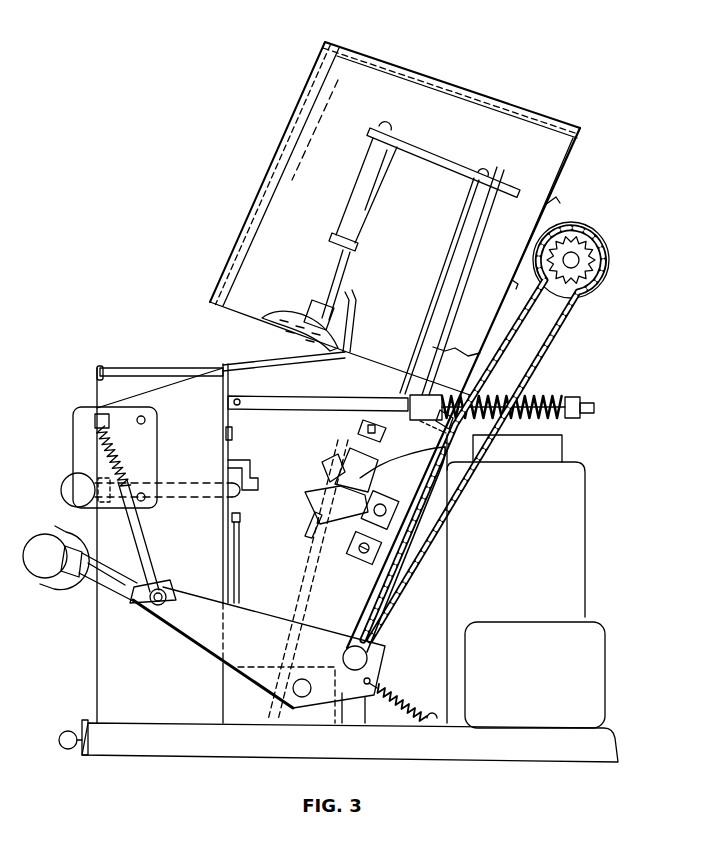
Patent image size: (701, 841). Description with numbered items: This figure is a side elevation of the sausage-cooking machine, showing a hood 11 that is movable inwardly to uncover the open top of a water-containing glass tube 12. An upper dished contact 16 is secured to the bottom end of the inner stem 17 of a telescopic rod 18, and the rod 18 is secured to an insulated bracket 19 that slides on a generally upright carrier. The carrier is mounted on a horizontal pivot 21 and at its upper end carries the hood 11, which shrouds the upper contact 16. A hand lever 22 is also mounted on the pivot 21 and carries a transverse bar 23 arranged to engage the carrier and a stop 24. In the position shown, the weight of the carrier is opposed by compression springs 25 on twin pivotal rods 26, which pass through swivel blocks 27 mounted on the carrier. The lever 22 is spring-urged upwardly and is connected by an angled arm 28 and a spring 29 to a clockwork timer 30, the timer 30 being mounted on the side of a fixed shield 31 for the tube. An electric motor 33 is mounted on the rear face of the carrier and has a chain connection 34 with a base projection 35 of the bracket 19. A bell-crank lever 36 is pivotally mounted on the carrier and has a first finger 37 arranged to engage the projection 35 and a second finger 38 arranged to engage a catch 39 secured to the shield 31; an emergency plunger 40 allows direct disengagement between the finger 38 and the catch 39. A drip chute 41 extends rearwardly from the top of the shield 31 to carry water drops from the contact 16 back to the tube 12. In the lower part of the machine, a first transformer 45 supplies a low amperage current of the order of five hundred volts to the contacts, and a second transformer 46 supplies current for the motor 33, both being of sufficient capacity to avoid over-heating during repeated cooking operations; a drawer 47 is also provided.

The hood 11 is at (293, 132).
The water-containing glass tube 12 is at (123, 367).
The upper dished contact 16 is at (288, 334).
The inner stem 17 is at (336, 270).
The telescopic rod 18 is at (366, 219).
The insulated bracket 19 is at (459, 223).
The horizontal pivot 21 is at (455, 388).
The hand lever 22 is at (182, 632).
The transverse bar 23 is at (360, 654).
The stop 24 is at (378, 676).
The compression springs 25 is at (555, 396).
The twin pivotal rods 26 is at (261, 410).
The swivel blocks 27 is at (414, 396).
The angled arm 28 is at (150, 545).
The spring 29 is at (105, 453).
The clockwork timer 30 is at (79, 421).
The fixed shield 31 is at (186, 374).
The electric motor 33 is at (601, 241).
The chain connection 34 is at (579, 318).
The base projection 35 is at (372, 436).
The bell-crank lever 36 is at (363, 510).
The first finger 37 is at (460, 468).
The second finger 38 is at (337, 487).
The catch 39 is at (258, 480).
The emergency plunger 40 is at (71, 481).
The drip chute 41 is at (312, 360).
The first transformer 45 is at (504, 561).
The second transformer 46 is at (525, 688).
The drawer 47 is at (77, 752).